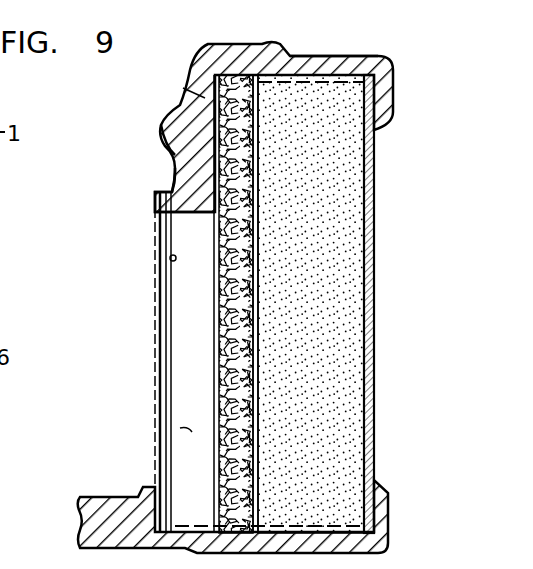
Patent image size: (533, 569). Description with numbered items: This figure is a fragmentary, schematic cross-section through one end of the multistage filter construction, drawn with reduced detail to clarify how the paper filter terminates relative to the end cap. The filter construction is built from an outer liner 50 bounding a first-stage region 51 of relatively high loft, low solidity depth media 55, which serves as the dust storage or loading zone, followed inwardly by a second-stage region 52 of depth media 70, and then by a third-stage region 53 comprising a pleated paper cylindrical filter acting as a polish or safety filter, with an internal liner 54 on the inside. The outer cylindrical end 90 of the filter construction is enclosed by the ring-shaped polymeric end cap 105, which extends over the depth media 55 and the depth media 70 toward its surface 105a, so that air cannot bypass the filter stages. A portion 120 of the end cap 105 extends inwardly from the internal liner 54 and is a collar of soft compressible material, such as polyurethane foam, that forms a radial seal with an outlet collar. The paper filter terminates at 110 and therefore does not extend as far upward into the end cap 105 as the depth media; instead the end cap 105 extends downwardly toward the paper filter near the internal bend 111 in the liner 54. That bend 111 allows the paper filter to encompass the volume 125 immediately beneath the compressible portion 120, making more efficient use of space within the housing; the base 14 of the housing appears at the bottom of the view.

The end cap 105 is at (260, 44).
The surface of end cap 105a is at (306, 56).
The end of filter construction 90 is at (183, 88).
The portion of end cap 120 is at (183, 138).
The internal bend 111 is at (177, 190).
The outer liner 50 is at (366, 210).
The depth media 55 is at (347, 288).
The stage 1 region 51 is at (340, 378).
The stage 2 region 52 is at (227, 303).
The depth media 70 is at (228, 360).
The internal liner 54 is at (207, 107).
The termination of paper filter 110 is at (157, 214).
The volume 125 is at (170, 258).
The stage 3 region 53 is at (180, 428).
The base 14 is at (233, 524).